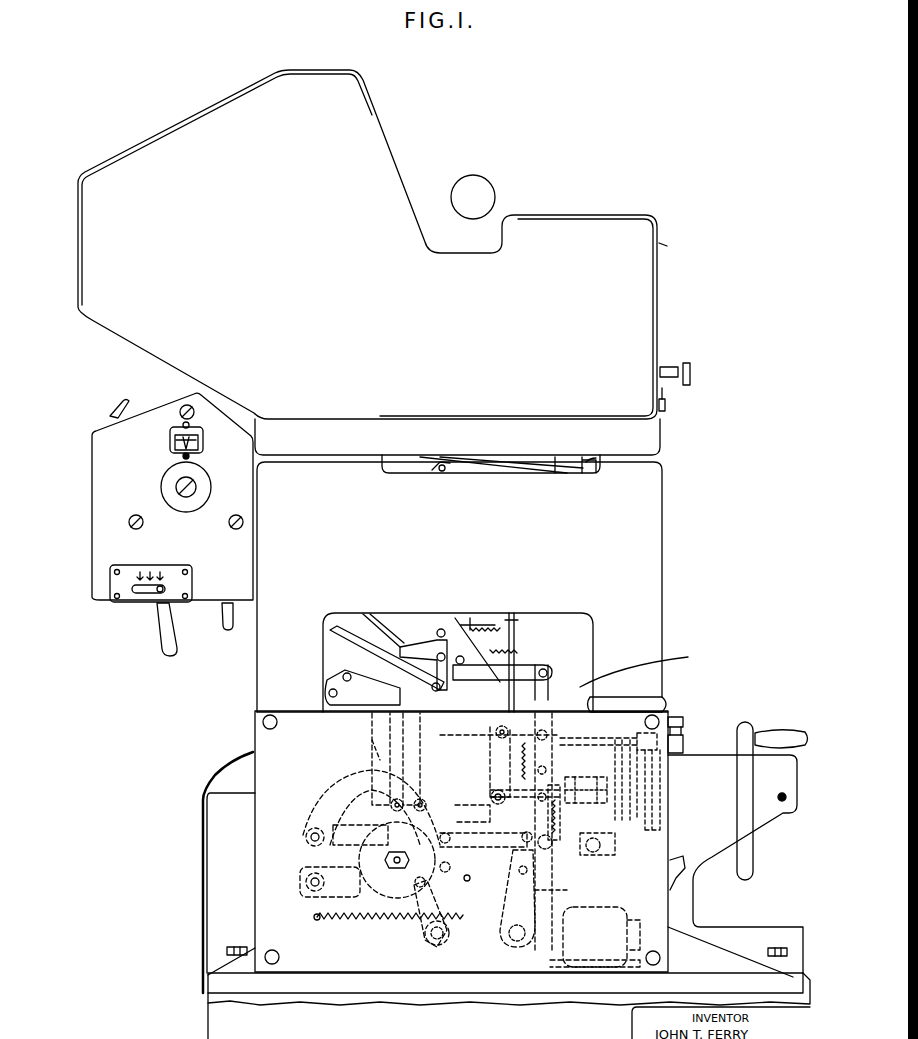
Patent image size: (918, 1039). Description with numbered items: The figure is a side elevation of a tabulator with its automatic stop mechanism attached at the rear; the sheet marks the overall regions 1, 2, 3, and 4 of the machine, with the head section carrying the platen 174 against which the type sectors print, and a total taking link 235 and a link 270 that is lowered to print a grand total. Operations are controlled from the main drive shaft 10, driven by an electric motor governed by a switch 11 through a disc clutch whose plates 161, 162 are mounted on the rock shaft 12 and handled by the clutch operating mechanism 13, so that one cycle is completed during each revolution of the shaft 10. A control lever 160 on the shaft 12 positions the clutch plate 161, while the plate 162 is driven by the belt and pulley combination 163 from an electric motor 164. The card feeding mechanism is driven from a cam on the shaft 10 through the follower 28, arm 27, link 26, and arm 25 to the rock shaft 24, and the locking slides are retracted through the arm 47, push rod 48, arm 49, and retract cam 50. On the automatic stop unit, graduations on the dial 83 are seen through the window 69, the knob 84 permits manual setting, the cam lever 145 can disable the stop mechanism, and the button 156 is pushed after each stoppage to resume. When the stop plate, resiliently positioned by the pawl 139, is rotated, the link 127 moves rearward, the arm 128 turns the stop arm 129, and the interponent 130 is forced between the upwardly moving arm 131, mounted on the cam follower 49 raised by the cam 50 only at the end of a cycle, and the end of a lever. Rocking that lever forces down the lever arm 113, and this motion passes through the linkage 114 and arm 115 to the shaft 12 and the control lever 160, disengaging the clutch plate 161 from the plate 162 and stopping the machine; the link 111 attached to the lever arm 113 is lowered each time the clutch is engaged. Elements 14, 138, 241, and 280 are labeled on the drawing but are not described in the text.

The hood / cover section 1 is at (746, 325).
The body / mechanism section 2 is at (746, 583).
The base section 3 is at (802, 870).
The control panel 4 is at (71, 527).
The main drive shaft 10 is at (367, 848).
The switch 11 is at (683, 857).
The rock shaft 12 is at (600, 840).
The clutch operating mechanism 13 is at (463, 764).
The housing flange 14 is at (642, 667).
The rock shaft 24 is at (535, 940).
The arm 25 is at (563, 893).
The link 26 is at (478, 830).
The arm 27 is at (450, 900).
The follower 28 is at (452, 878).
The arm 47 is at (372, 717).
The push rod 48 is at (380, 738).
The arm 49 is at (350, 780).
The retract cam 50 is at (417, 905).
The window 69 is at (170, 445).
The circular dial 83 is at (203, 443).
The knob 84 is at (165, 487).
The link 111 is at (392, 628).
The lever arm 113 is at (530, 665).
The linkage 114 is at (548, 690).
The arm 115 is at (575, 855).
The link 127 is at (333, 634).
The arm 128 is at (438, 628).
The stop arm 129 is at (480, 738).
The interponent 130 is at (420, 718).
The arm 131 is at (406, 745).
The hand lever 138 is at (170, 640).
The pawl 139 is at (224, 628).
The cam lever 145 is at (140, 395).
The button 156 is at (688, 750).
The control lever 160 is at (600, 778).
The clutch plate 161 is at (625, 750).
The clutch plate 162 is at (660, 760).
The belt and pulley combination 163 is at (662, 782).
The electric motor 164 is at (608, 915).
The platen 174 is at (477, 195).
The total taking link 235 is at (533, 609).
The blade 241 is at (570, 457).
The link 270 is at (598, 460).
The spring 280 is at (470, 620).